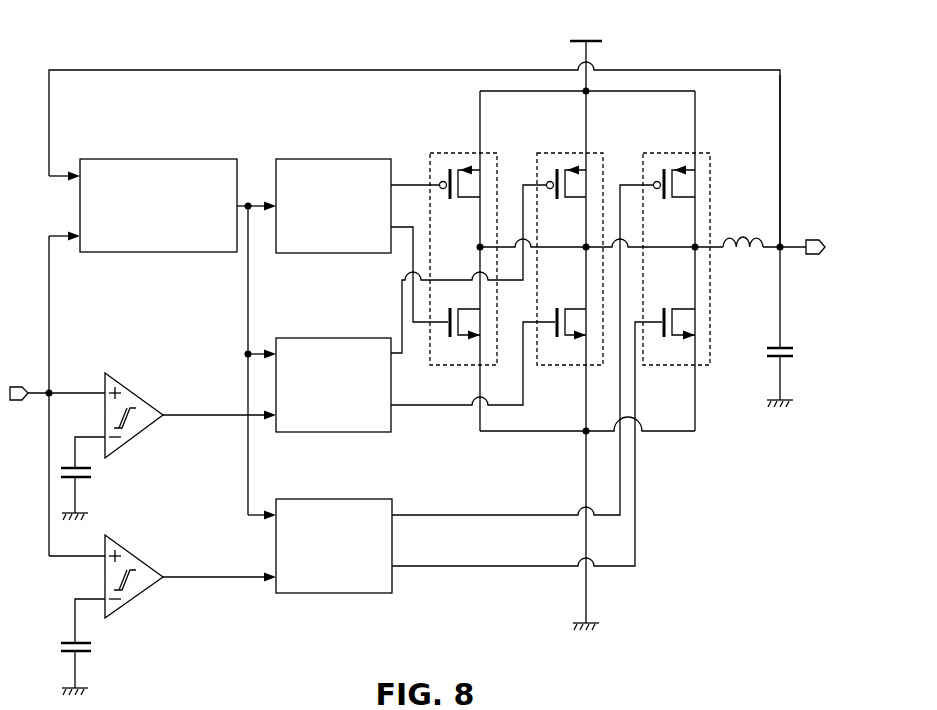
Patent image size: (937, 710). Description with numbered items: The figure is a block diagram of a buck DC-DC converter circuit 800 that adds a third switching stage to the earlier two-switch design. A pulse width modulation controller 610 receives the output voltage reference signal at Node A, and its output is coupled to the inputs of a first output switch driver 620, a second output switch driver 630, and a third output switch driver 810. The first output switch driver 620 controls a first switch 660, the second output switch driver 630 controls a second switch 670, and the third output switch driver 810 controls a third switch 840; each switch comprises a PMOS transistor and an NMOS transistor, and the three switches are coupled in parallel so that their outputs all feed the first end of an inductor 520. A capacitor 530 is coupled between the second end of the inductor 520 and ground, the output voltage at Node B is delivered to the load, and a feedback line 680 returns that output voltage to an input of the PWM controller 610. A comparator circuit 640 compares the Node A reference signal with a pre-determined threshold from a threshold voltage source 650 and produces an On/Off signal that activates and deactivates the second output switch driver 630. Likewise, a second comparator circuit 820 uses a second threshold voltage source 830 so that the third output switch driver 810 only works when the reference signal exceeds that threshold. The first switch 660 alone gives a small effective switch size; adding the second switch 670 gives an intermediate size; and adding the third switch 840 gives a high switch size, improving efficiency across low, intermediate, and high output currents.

The DC-DC converter circuit 800 is at (743, 33).
The pulse width modulation (PWM) controller 610 is at (166, 158).
The first output switch driver 620 is at (331, 158).
The second output switch driver 630 is at (331, 337).
The third output switch driver 810 is at (331, 498).
The first switch 660 is at (456, 152).
The second switch 670 is at (561, 152).
The third switch 840 is at (668, 152).
The inductor 520 is at (748, 229).
The capacitor 530 is at (777, 346).
The feedback line 680 is at (781, 150).
The comparator circuit 640 is at (134, 392).
The threshold voltage source 650 is at (90, 480).
The second comparator circuit 820 is at (134, 554).
The second threshold voltage source 830 is at (90, 652).